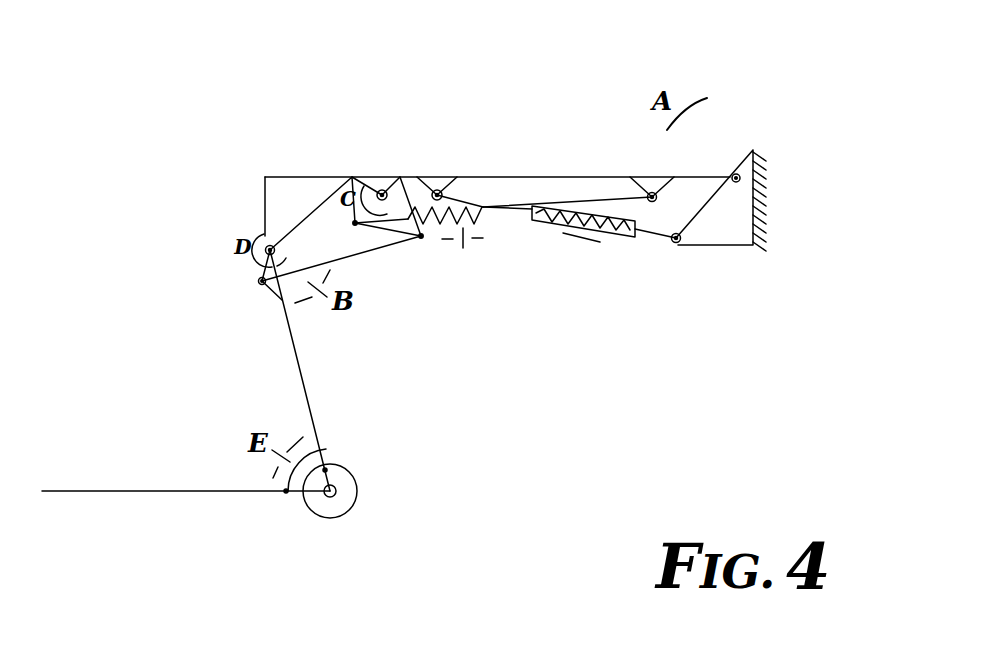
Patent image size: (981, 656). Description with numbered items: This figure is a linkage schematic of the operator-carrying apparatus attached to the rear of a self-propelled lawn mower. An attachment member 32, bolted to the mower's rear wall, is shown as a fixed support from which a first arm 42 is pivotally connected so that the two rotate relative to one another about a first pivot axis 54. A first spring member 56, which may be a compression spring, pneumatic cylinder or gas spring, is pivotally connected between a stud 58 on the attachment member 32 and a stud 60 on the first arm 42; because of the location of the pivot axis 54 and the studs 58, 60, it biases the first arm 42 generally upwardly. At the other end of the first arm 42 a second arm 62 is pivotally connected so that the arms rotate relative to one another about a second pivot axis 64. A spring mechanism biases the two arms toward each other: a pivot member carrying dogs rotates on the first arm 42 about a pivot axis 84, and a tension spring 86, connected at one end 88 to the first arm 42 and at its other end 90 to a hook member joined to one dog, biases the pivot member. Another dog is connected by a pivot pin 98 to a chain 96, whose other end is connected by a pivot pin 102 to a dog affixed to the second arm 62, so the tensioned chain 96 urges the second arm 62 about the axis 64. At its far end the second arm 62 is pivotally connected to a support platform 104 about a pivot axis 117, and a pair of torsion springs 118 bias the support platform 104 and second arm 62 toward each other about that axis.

The attachment member 32 is at (730, 230).
The first arm 42 is at (541, 177).
The first pivot axis 54 is at (737, 173).
The first spring member 56 is at (616, 244).
The stud 58 is at (677, 243).
The stud 60 is at (437, 190).
The second arm 62 is at (303, 370).
The second pivot axis 64 is at (266, 247).
The pivot axis 84 is at (382, 190).
The tension spring 86 is at (485, 211).
The one end of spring 88 is at (652, 177).
The other end of spring 90 is at (353, 222).
The chain 96 is at (365, 253).
The pivot pin 98 is at (422, 238).
The pivot pin 102 is at (259, 281).
The support platform 104 is at (198, 491).
The pivot axis 117 is at (336, 496).
The torsion springs 118 is at (357, 488).